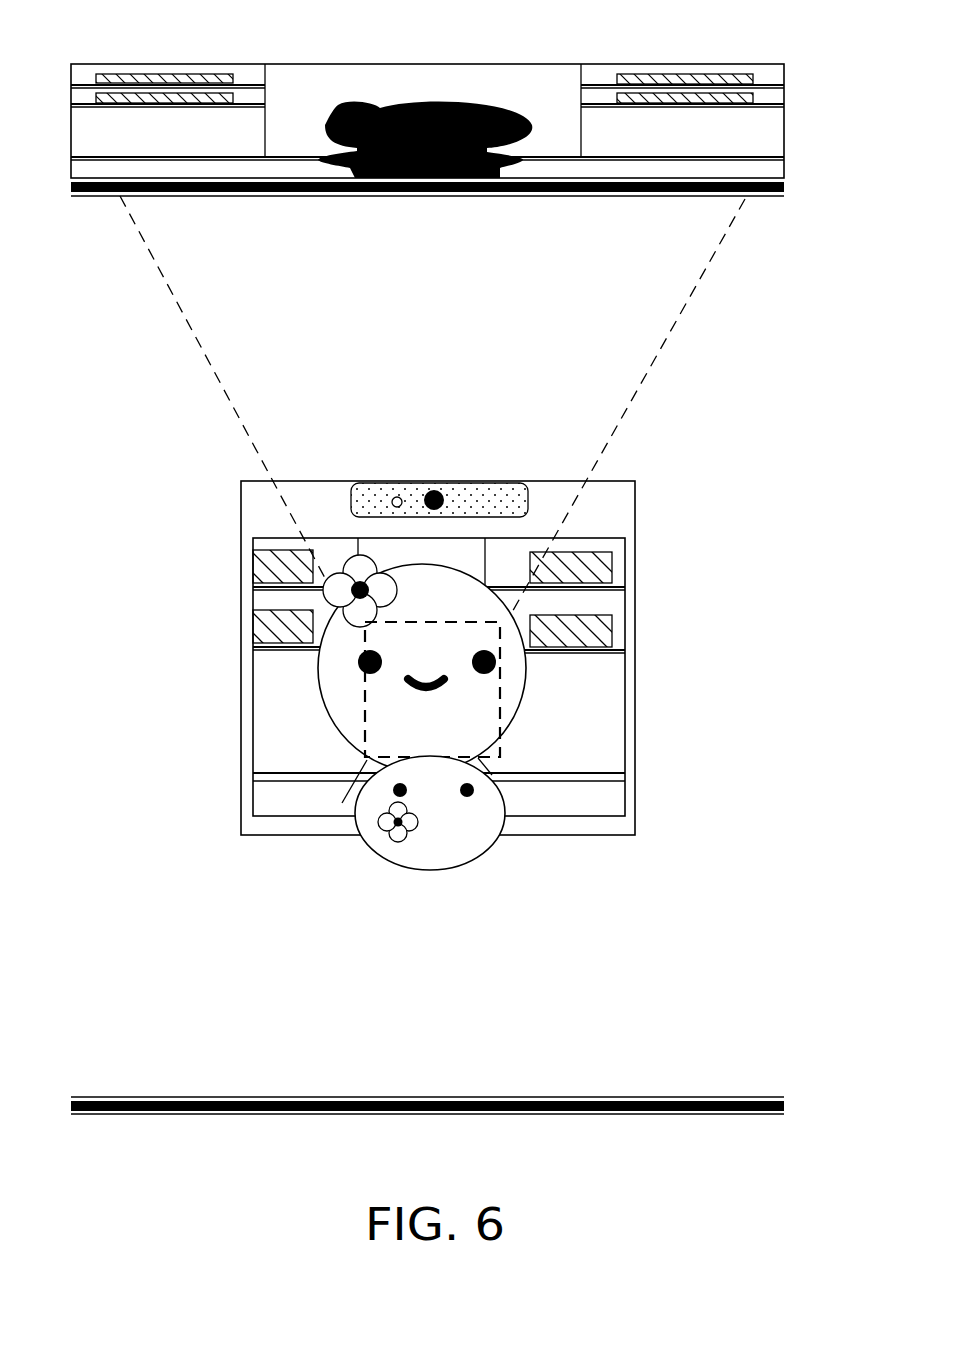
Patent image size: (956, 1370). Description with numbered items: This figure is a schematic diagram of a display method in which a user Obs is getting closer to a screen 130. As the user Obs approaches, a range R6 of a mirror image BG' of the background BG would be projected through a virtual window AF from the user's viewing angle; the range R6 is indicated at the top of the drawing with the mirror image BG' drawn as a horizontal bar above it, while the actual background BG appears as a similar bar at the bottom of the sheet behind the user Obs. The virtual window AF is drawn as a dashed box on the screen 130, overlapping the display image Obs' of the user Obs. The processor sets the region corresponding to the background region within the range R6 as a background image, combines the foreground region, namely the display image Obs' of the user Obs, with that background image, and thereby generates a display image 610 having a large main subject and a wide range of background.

The range R6 is at (133, 198).
The mirror image BG' is at (438, 231).
The screen 130 is at (637, 672).
The display image 610 is at (585, 540).
The display image of the user Obs' is at (514, 679).
The virtual window AF is at (455, 622).
The user Obs is at (463, 825).
The background BG is at (427, 1146).